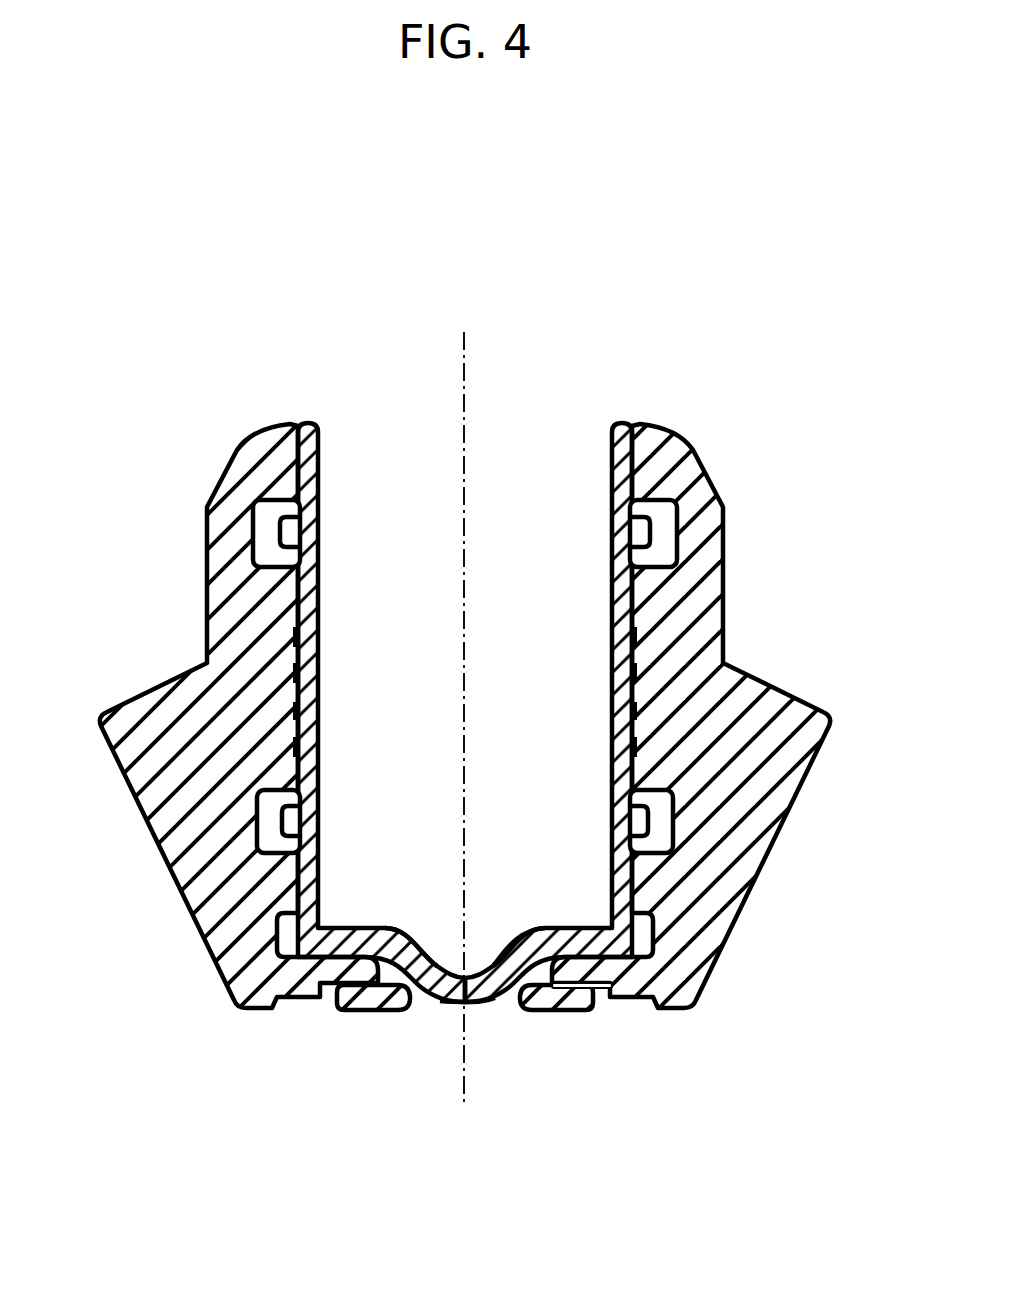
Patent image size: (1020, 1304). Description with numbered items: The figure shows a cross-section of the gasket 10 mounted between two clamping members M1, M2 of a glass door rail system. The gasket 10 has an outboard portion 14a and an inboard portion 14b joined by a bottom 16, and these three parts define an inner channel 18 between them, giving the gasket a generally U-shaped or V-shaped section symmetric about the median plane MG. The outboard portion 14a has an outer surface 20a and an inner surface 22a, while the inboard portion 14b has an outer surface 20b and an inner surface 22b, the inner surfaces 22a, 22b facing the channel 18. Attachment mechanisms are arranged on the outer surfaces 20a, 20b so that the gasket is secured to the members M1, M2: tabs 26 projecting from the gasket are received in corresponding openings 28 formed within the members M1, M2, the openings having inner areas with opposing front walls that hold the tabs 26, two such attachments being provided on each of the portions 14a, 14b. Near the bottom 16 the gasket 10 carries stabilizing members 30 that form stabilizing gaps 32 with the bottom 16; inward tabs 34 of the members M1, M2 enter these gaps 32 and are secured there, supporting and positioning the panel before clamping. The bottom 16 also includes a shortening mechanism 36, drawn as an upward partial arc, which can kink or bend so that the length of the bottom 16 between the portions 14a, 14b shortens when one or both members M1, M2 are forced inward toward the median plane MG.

The gasket 10 is at (474, 654).
The outboard portion 14a is at (269, 670).
The inboard portion 14b is at (670, 721).
The bottom 16 is at (420, 1018).
The inner channel 18 is at (433, 452).
The outer surface of outboard portion 20a is at (286, 673).
The outer surface of inboard portion 20b is at (646, 683).
The inner surface of outboard portion 22a is at (322, 626).
The inner surface of inboard portion 22b is at (608, 626).
The tabs 26 is at (262, 530).
The openings 28 is at (268, 515).
The stabilizing members 30 is at (560, 993).
The stabilizing gaps 32 is at (533, 1000).
The inward tabs 34 is at (628, 982).
The shortening mechanism 36 is at (453, 1018).
The clamping member M1 is at (170, 876).
The clamping member M2 is at (772, 882).
The median plane MG is at (496, 718).